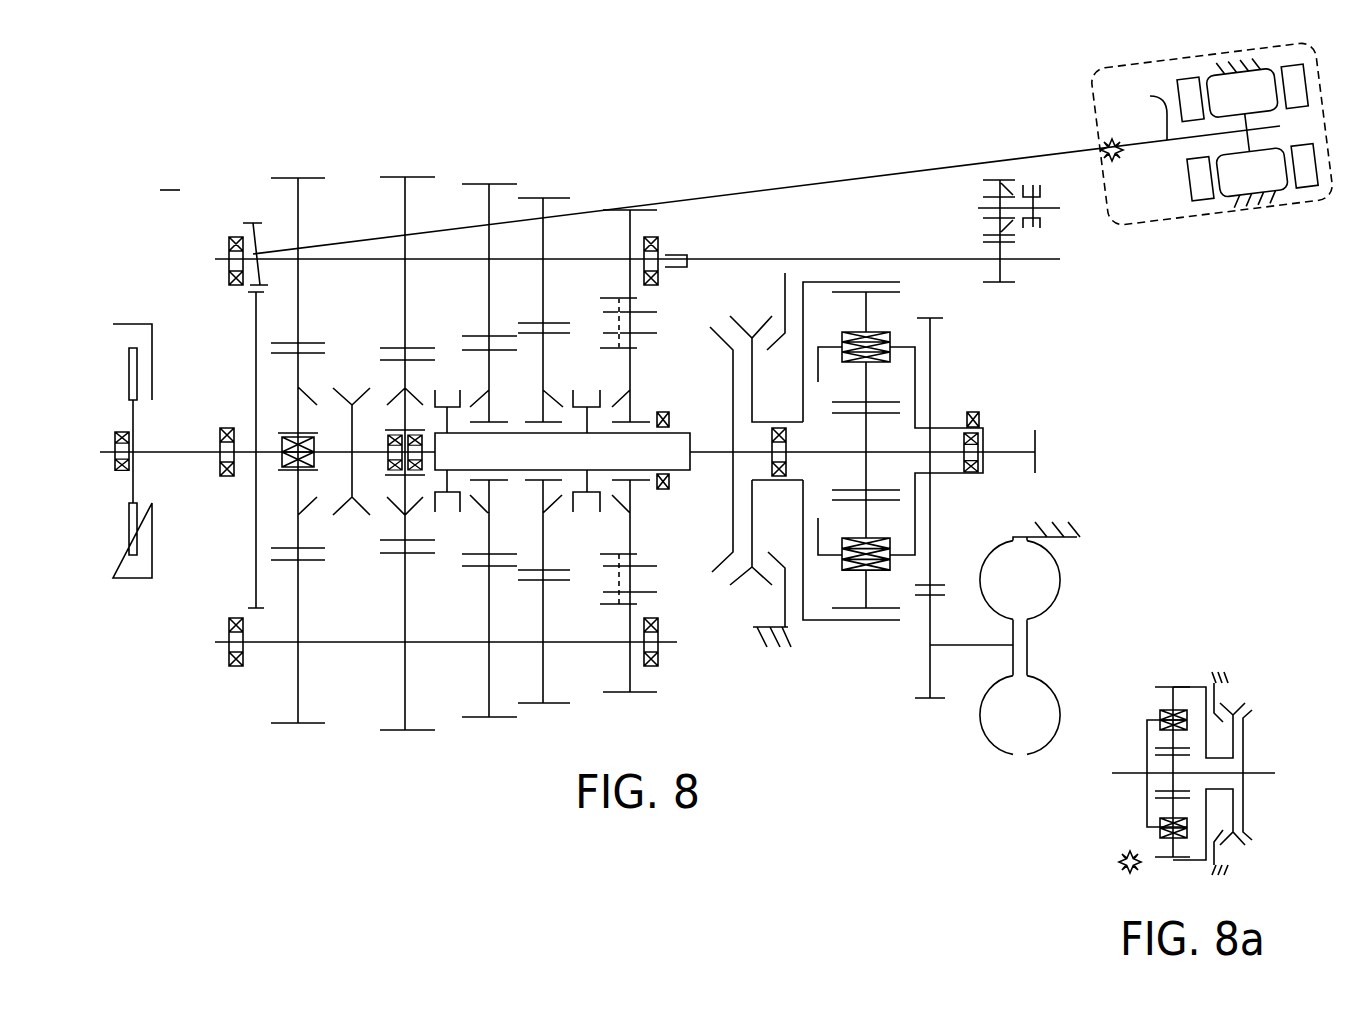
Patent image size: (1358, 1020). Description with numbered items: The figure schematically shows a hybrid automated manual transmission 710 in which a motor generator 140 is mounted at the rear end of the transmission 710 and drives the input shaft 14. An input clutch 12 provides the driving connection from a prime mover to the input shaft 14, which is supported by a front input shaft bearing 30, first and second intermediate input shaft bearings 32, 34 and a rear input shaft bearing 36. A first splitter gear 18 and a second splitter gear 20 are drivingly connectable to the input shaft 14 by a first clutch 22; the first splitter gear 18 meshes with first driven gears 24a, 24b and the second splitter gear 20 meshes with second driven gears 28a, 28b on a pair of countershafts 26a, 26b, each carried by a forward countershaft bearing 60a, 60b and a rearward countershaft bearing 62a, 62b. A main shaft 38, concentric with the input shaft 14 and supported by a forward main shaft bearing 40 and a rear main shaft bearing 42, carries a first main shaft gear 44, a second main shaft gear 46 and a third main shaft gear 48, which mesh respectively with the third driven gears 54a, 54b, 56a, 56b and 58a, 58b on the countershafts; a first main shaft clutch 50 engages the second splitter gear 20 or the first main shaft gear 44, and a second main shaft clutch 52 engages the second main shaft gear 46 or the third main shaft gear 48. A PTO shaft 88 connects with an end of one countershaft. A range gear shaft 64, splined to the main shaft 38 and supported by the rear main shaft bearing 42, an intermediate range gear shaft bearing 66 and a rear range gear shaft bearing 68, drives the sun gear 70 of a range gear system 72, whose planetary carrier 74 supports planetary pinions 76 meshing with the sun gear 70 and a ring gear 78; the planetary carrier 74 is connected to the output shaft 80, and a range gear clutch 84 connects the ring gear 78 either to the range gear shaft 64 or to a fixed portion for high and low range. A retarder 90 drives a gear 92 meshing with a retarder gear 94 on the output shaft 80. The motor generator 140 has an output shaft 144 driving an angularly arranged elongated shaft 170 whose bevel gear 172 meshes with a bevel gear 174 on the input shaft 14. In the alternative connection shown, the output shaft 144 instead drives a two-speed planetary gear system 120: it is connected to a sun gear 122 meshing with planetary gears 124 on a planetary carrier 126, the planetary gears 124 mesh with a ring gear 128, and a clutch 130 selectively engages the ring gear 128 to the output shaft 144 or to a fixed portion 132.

In FIG. 8, the hybrid automated manual transmission 710 is at (856, 112).
In FIG. 8, the input clutch 12 is at (124, 606).
In FIG. 8, the input shaft 14 is at (203, 450).
In FIG. 8, the front input shaft bearing 30 is at (129, 463).
In FIG. 8, the first intermediate input shaft bearing 32 is at (228, 478).
In FIG. 8, the second intermediate input shaft bearing 34 is at (282, 437).
In FIG. 8, the rear input shaft bearing 36 is at (398, 435).
In FIG. 8, the first clutch 22 is at (355, 345).
In FIG. 8, the first splitter gear 18 is at (297, 530).
In FIG. 8, the first driven gear 24a is at (299, 226).
In FIG. 8, the first driven gear 24b is at (298, 680).
In FIG. 8, the second splitter gear 20 is at (405, 525).
In FIG. 8, the second driven gear 28a is at (407, 222).
In FIG. 8, the second driven gear 28b is at (405, 694).
In FIG. 8, the forward main shaft bearing 40 is at (443, 456).
In FIG. 8, the main shaft 38 is at (517, 432).
In FIG. 8, the rear main shaft bearing 42 is at (670, 412).
In FIG. 8, the countershaft 26a is at (560, 259).
In FIG. 8, the countershaft 26b is at (427, 645).
In FIG. 8, the third driven gear 54a is at (490, 196).
In FIG. 8, the third driven gear 54b is at (490, 704).
In FIG. 8, the first main shaft clutch 50 is at (454, 346).
In FIG. 8, the first main shaft gear 44 is at (490, 525).
In FIG. 8, the third driven gear 56a is at (545, 212).
In FIG. 8, the third driven gear 56b is at (543, 686).
In FIG. 8, the second main shaft gear 46 is at (545, 548).
In FIG. 8, the third driven gear 58a is at (632, 237).
In FIG. 8, the third driven gear 58b is at (630, 676).
In FIG. 8, the second main shaft clutch 52 is at (587, 352).
In FIG. 8, the third main shaft gear 48 is at (632, 531).
In FIG. 8, the forward countershaft bearing 60a is at (229, 273).
In FIG. 8, the forward countershaft bearing 60b is at (229, 660).
In FIG. 8, the rearward countershaft bearing 62a is at (658, 278).
In FIG. 8, the rearward countershaft bearing 62b is at (656, 624).
In FIG. 8, the bevel gear 172 is at (250, 225).
In FIG. 8, the bevel gear 174 is at (256, 336).
In FIG. 8, the angularly arranged elongated shaft 170 is at (775, 189).
In FIG. 8a, the angularly arranged elongated shaft 170 is at (1133, 772).
In FIG. 8, the PTO shaft 88 is at (902, 259).
In FIG. 8, the output shaft 80 is at (1012, 455).
In FIG. 8, the range gear shaft 64 is at (855, 450).
In FIG. 8, the range gear clutch 84 is at (742, 615).
In FIG. 8, the ring gear 78 is at (860, 282).
In FIG. 8, the intermediate range gear shaft bearing 66 is at (787, 465).
In FIG. 8, the planetary carrier 74 is at (905, 350).
In FIG. 8, the range gear system 72 is at (843, 665).
In FIG. 8, the sun gear 70 is at (875, 417).
In FIG. 8, the planetary pinions 76 is at (885, 293).
In FIG. 8, the rear range gear shaft bearing 68 is at (981, 420).
In FIG. 8, the retarder gear 94 is at (938, 583).
In FIG. 8, the gear 92 is at (922, 700).
In FIG. 8, the retarder 90 is at (1006, 782).
In FIG. 8, the motor generator 140 is at (1256, 225).
In FIG. 8, the output shaft 144 is at (1150, 97).
In FIG. 8a, the output shaft 144 is at (1252, 773).
In FIG. 8a, the 2-speed planetary gear system 120 is at (1193, 652).
In FIG. 8a, the planetary gears 124 is at (1170, 703).
In FIG. 8a, the sun gear 122 is at (1163, 793).
In FIG. 8a, the planetary carrier 126 is at (1147, 743).
In FIG. 8a, the ring gear 128 is at (1183, 687).
In FIG. 8a, the clutch 130 is at (1244, 680).
In FIG. 8a, the fixed portion 132 is at (1212, 870).